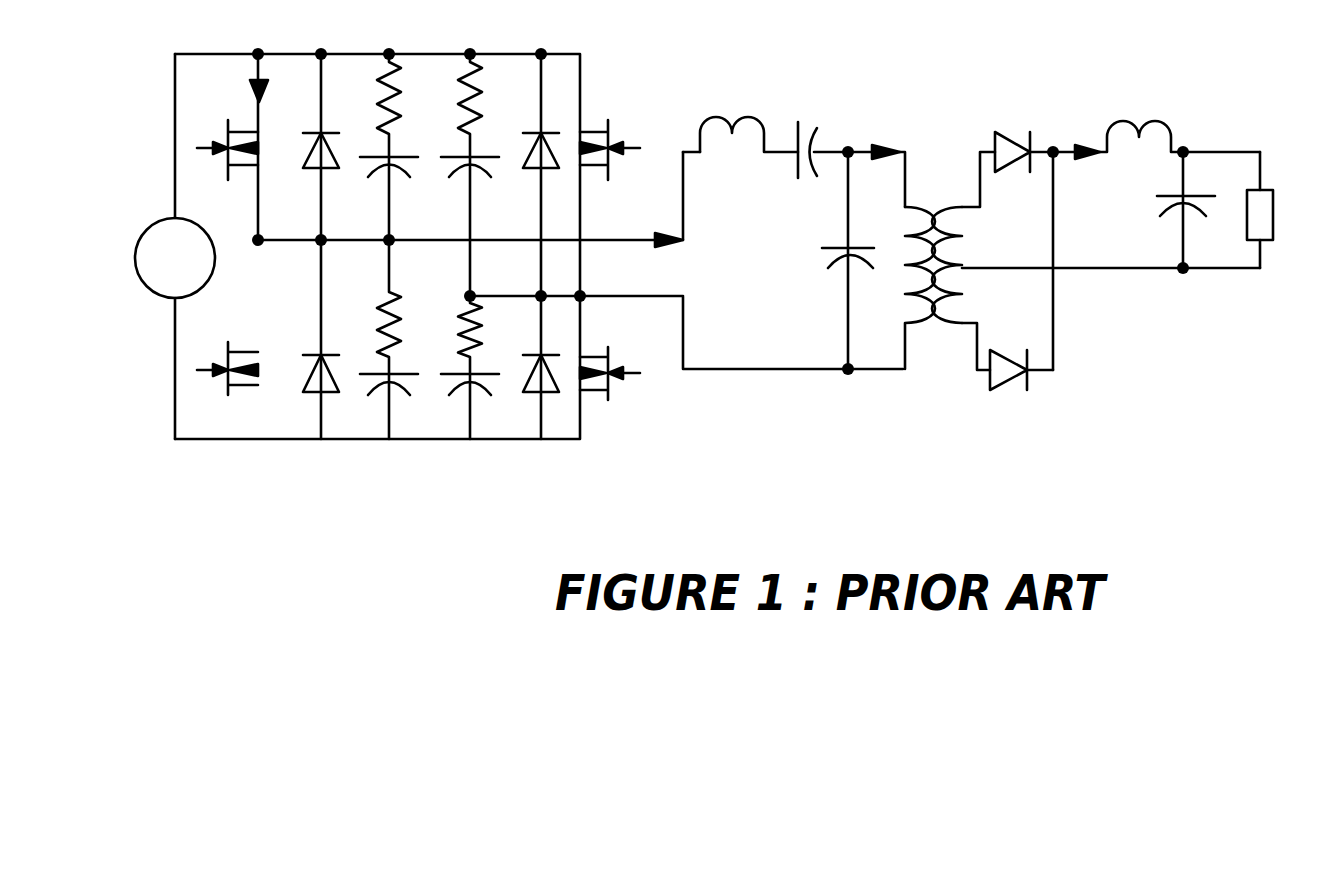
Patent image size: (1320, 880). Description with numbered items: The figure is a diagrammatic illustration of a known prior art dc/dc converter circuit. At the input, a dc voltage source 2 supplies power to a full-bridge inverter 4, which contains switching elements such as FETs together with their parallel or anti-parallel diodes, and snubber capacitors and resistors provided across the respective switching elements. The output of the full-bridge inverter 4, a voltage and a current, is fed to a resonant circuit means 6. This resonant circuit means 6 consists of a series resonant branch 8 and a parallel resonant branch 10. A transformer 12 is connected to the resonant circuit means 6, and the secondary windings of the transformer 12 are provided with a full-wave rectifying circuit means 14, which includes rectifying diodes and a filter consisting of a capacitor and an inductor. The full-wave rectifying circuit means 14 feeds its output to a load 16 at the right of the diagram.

The dc voltage source 2 is at (140, 230).
The full-bridge inverter 4 is at (593, 498).
The resonant circuit means 6 is at (850, 407).
The series resonant branch 8 is at (820, 88).
The parallel resonant branch 10 is at (888, 102).
The transformer 12 is at (987, 427).
The full-wave rectifying circuit means 14 is at (1278, 452).
The load 16 is at (1285, 183).